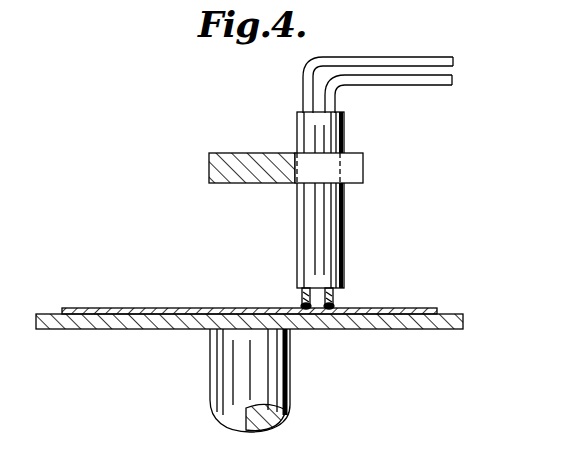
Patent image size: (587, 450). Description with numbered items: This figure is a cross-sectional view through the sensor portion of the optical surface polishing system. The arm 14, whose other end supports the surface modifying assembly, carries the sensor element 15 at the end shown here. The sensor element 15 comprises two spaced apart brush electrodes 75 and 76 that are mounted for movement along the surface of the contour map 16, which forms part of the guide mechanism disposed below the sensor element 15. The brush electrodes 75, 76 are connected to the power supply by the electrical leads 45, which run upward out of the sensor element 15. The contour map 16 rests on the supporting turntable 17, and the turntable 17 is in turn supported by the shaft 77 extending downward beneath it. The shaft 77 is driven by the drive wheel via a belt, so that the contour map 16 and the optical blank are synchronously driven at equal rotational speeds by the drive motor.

The arm 14 is at (238, 160).
The sensor element 15 is at (345, 214).
The contour map 16 is at (416, 310).
The turntable 17 is at (464, 324).
The electrical leads 45 is at (406, 81).
The brush electrode 75 is at (302, 297).
The brush electrode 76 is at (333, 297).
The shaft 77 is at (285, 373).